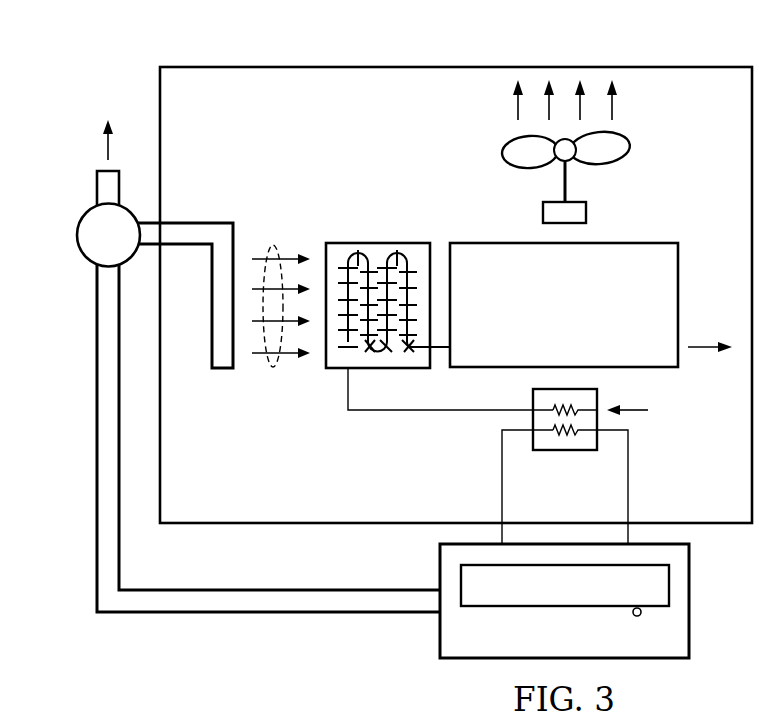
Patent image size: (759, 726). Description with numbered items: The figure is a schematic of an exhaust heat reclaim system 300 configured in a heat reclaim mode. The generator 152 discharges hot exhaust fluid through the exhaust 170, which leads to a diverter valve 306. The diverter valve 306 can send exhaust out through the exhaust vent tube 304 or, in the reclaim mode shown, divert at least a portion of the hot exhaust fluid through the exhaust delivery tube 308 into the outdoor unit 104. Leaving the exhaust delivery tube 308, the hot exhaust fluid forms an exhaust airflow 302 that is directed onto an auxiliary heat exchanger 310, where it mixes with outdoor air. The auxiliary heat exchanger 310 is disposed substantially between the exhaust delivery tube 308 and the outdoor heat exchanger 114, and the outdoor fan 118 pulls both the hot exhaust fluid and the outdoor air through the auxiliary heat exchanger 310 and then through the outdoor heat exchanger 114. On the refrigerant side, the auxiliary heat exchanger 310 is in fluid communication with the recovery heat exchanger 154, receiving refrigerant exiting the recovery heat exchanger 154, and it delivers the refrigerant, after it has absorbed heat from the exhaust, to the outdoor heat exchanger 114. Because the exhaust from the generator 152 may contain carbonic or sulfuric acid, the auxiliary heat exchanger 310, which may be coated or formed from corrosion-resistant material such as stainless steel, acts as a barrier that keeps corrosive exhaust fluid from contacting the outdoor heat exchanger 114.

The exhaust heat reclaim system 300 is at (77, 50).
The outdoor unit 104 is at (647, 67).
The outdoor fan 118 is at (502, 152).
The outdoor heat exchanger 114 is at (637, 243).
The auxiliary heat exchanger 310 is at (377, 243).
The exhaust airflow 302 is at (274, 247).
The exhaust delivery tube 308 is at (200, 223).
The diverter valve 306 is at (77, 237).
The exhaust vent tube 304 is at (97, 188).
The exhaust 170 is at (270, 613).
The recovery heat exchanger 154 is at (565, 452).
The generator 152 is at (690, 600).